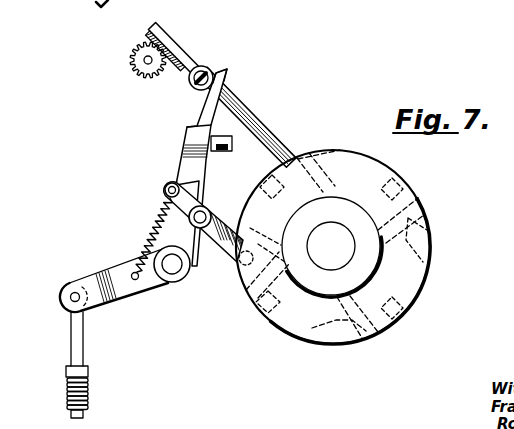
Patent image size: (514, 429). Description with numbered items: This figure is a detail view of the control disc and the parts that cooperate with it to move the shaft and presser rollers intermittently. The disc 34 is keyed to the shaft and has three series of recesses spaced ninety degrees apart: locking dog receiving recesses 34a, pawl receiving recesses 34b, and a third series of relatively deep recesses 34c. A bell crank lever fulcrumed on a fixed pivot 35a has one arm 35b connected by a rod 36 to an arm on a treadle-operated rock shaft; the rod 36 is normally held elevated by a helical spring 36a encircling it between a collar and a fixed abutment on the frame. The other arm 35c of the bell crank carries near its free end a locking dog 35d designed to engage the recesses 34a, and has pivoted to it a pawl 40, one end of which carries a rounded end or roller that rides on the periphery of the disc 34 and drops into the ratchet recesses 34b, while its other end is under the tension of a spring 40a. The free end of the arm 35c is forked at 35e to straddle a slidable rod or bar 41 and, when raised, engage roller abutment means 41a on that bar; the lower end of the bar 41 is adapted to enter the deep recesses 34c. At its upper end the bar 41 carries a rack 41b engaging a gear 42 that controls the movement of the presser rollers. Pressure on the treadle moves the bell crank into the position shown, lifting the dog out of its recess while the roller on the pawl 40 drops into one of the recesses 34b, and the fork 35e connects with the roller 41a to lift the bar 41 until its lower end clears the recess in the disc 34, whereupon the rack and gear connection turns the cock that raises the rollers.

The disc 34 is at (370, 168).
The locking dog receiving recesses 34a is at (273, 195).
The pawl receiving recesses 34b is at (328, 165).
The relatively deep recesses 34c is at (412, 211).
The fixed pivot 35a is at (172, 267).
The arm 35b is at (128, 250).
The arm 35c is at (189, 161).
The locking dog 35d is at (218, 152).
The fork 35e is at (228, 75).
The rod 36 is at (83, 346).
The helical spring 36a is at (89, 393).
The pawl 40 is at (229, 250).
The spring 40a is at (166, 192).
The slidable rod or bar 41 is at (249, 127).
The roller abutment means 41a is at (207, 69).
The rack 41b is at (152, 29).
The gear 42 is at (134, 72).